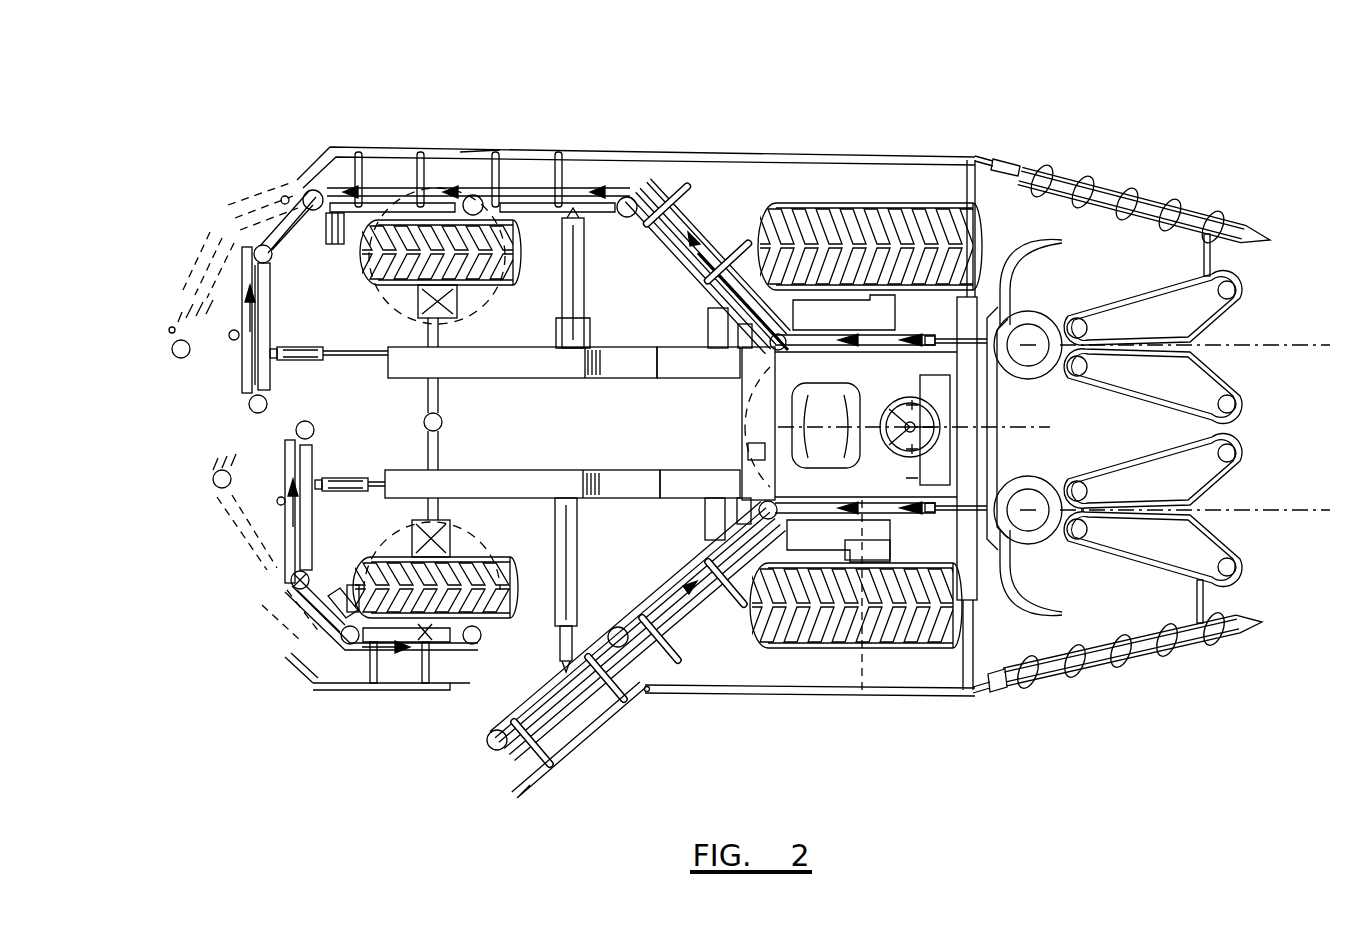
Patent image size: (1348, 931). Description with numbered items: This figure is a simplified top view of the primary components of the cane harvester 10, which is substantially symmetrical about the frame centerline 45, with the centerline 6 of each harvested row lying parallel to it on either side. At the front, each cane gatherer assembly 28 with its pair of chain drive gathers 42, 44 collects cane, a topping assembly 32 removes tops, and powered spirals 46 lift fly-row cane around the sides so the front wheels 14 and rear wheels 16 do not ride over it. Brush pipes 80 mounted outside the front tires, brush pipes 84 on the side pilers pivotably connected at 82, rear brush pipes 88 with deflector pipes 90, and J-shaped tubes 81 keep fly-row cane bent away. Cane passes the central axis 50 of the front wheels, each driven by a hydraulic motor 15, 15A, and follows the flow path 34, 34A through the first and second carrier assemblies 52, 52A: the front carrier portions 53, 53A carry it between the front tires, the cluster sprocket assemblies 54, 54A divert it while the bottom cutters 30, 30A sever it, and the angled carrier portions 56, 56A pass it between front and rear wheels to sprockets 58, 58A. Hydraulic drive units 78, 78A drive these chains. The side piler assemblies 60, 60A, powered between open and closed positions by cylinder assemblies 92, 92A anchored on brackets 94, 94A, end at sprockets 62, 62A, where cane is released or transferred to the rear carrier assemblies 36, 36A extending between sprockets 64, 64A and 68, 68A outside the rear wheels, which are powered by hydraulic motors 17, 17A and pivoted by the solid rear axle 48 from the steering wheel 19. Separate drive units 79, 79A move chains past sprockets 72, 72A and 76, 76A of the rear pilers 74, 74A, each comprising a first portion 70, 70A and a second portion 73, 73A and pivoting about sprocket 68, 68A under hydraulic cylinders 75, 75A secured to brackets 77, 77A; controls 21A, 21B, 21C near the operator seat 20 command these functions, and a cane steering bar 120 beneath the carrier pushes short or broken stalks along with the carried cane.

The row centerline 6 is at (1288, 348).
The harvester 10 is at (1190, 159).
The front wheel 14 is at (922, 645).
The hydraulic motor 15 is at (880, 552).
The hydraulic motor 15A is at (884, 302).
The rear wheel 16 is at (497, 612).
The hydraulic motor 17 is at (442, 530).
The hydraulic motor 17A is at (450, 296).
The steering wheel 19 is at (936, 410).
The operator seat 20 is at (758, 400).
The control member 21A is at (903, 402).
The control member 21B is at (889, 447).
The control member 21C is at (905, 476).
The cane gatherer assembly 28 is at (1222, 527).
The cutter assembly 30 is at (740, 478).
The bottom cutter 30A is at (754, 374).
The topping assembly 32 is at (1036, 480).
The cane flow path 34 is at (982, 494).
The cane flow path 34A is at (896, 343).
The rear carrier assembly 36 is at (398, 652).
The rear carrier assembly 36A is at (403, 188).
The chain drive gather 42 is at (1187, 479).
The chain drive gather 44 is at (1200, 557).
The frame centerline 45 is at (1103, 426).
The powered spiral 46 is at (1173, 646).
The rear axle 48 is at (435, 515).
The front wheel central axis 50 is at (862, 662).
The carrier assembly 52 is at (890, 505).
The carrier assembly 52A is at (858, 348).
The front carrier portion 53 is at (978, 540).
The front carrier portion 53A is at (962, 333).
The sprocket assembly 54 is at (740, 503).
The sprocket assembly 54A is at (742, 348).
The angled carrier portion 56 is at (690, 594).
The angled carrier portion 56A is at (712, 290).
The sprocket 58 is at (621, 627).
The sprocket 58A is at (633, 199).
The side piler assembly 60 is at (571, 716).
The side piler assembly 60A is at (532, 186).
The sprocket 62 is at (487, 742).
The sprocket 62A is at (473, 195).
The sprocket 64 is at (484, 634).
The sprocket 64A is at (517, 205).
The sprocket 68 is at (349, 645).
The sprocket 68A is at (284, 196).
The first piler portion 70 is at (323, 598).
The first piler portion 70A is at (307, 194).
The sprocket 72 is at (293, 585).
The sprocket 72A is at (255, 260).
The second piler portion 73 is at (285, 481).
The second piler portion 73A is at (238, 360).
The rear piler 74 is at (285, 537).
The rear piler 74A is at (240, 318).
The hydraulic cylinder 75 is at (333, 478).
The hydraulic cylinder 75A is at (301, 348).
The sprocket 76 is at (305, 421).
The sprocket 76A is at (250, 407).
The bracket 77 is at (379, 486).
The bracket 77A is at (698, 268).
The hydraulic drive unit 78 is at (708, 503).
The hydraulic drive unit 78A is at (737, 318).
The hydraulic drive unit 79 is at (747, 451).
The hydraulic drive unit 79A is at (340, 247).
The brush pipe 80 is at (826, 156).
The J-shaped tube 81 is at (533, 760).
The pivot connection 82 is at (647, 692).
The brush pipe 84 is at (515, 160).
The rear brush pipe 88 is at (411, 690).
The deflector pipe 90 is at (288, 672).
The cylinder assembly 92 is at (497, 626).
The cylinder assembly 92A is at (578, 300).
The bracket 94 is at (522, 485).
The bracket 94A is at (522, 362).
The cane steering bar 120 is at (230, 331).